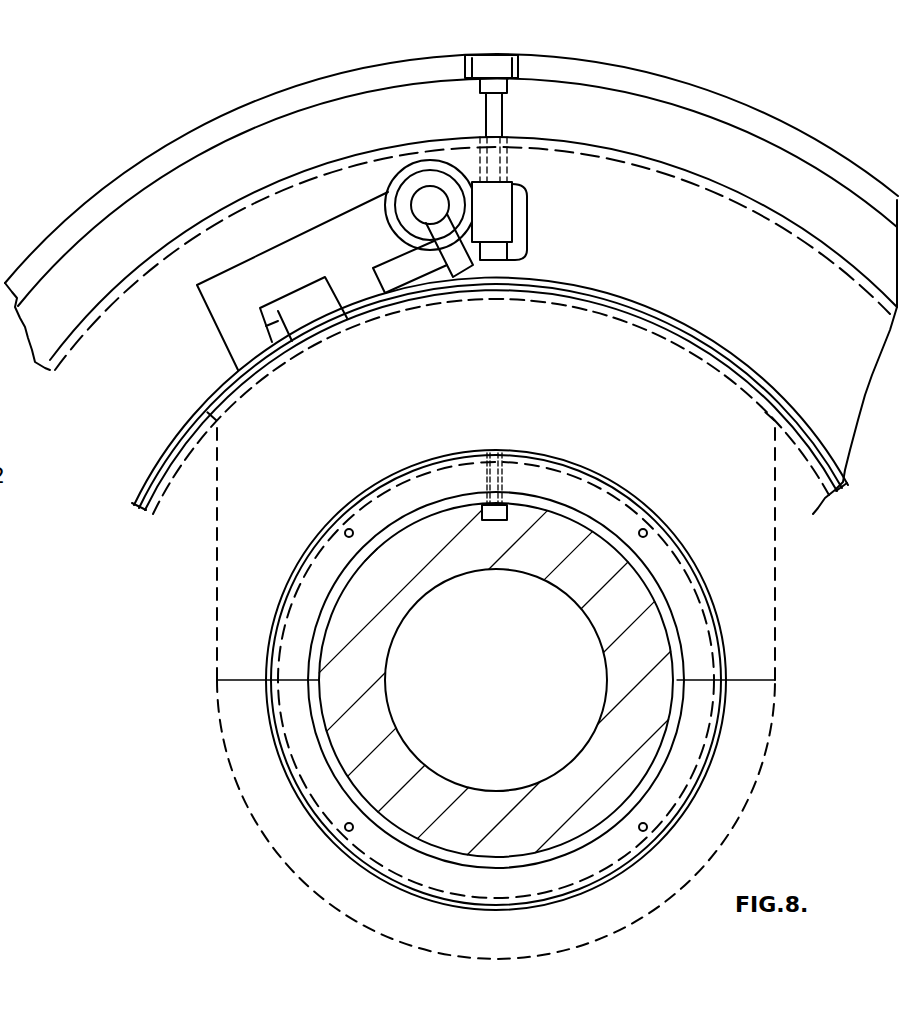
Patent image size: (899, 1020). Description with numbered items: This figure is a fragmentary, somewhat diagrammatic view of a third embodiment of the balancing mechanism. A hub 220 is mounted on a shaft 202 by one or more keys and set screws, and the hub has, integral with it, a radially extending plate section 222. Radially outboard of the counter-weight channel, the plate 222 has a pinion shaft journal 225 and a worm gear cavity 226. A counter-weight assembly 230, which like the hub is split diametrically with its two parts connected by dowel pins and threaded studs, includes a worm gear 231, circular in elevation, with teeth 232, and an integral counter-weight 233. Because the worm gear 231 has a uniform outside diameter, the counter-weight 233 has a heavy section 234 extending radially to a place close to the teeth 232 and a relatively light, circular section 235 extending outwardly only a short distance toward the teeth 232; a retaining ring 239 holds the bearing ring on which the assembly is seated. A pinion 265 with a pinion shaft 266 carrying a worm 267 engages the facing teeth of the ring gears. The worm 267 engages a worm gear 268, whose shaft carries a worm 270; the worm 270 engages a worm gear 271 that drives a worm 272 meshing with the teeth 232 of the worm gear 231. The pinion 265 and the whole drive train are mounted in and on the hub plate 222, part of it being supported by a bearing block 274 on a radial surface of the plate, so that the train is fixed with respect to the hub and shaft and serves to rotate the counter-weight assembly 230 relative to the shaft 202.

The shaft 202 is at (431, 786).
The hub 220 is at (408, 522).
The plate section 222 is at (770, 338).
The pinion shaft journal 225 is at (505, 138).
The worm gear cavity 226 is at (514, 214).
The counter-weight assembly 230 is at (789, 580).
The worm gear 231 is at (806, 483).
The teeth 232 is at (147, 481).
The counter-weight 233 is at (742, 548).
The heavy section 234 is at (258, 502).
The light circular section 235 is at (596, 918).
The retaining ring 239 is at (586, 496).
The pinion 265 is at (497, 71).
The pinion shaft 266 is at (497, 108).
The worm 267 is at (506, 194).
The worm gear 268 is at (441, 162).
The worm 270 is at (426, 212).
The worm gear 271 is at (480, 278).
The worm 272 is at (311, 302).
The bearing block 274 is at (356, 216).